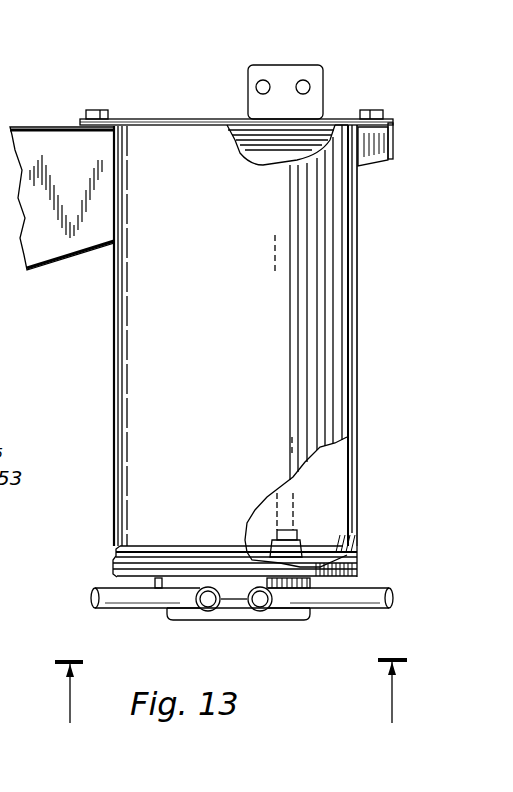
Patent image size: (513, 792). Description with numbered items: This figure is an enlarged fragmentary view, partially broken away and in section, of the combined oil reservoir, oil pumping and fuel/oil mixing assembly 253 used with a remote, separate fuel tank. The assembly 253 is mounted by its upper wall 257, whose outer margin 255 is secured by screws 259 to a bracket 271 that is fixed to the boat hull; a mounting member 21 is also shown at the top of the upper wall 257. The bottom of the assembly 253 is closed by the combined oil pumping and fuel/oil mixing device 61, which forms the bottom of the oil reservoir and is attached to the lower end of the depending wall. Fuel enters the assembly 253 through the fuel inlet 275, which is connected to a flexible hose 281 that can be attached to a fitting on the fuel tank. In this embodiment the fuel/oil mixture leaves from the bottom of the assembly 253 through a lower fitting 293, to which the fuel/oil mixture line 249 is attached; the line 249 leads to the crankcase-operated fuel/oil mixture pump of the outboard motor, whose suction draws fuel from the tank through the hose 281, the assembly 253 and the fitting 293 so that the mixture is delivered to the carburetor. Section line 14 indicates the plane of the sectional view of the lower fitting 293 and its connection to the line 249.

The mounting bracket 21 is at (292, 78).
The upper wall 257 is at (338, 125).
The screws 259 is at (100, 110).
The outer margin 255 is at (393, 121).
The bracket 271 is at (67, 107).
The combined oil reservoir, oil pumping and fuel/oil mixing assembly 253 is at (372, 242).
The flexible hose 281 is at (375, 590).
The fuel/oil mixture line 249 is at (147, 598).
The combined oil pumping and fuel/oil mixing device 61 is at (180, 632).
The fitting 293 is at (207, 612).
The fuel inlet 275 is at (265, 618).
The section line 14- 14 is at (88, 755).